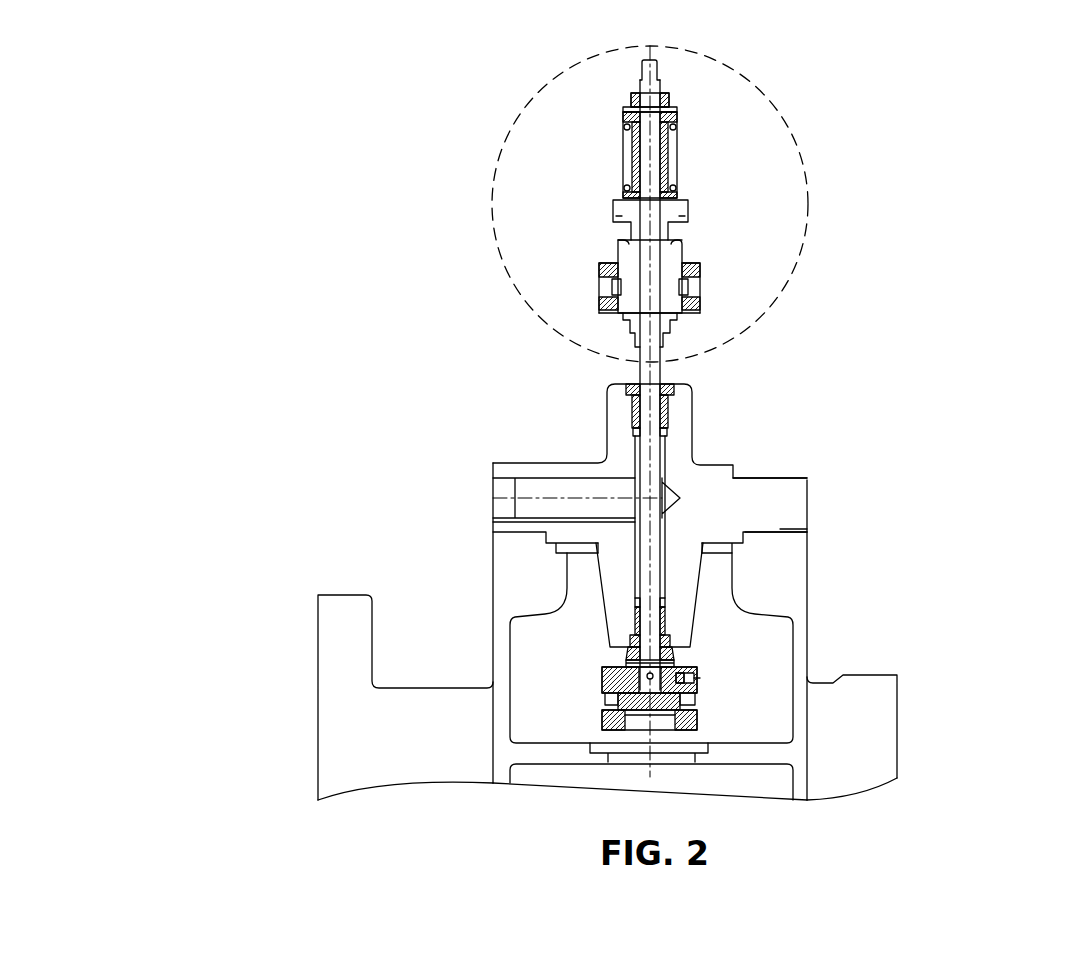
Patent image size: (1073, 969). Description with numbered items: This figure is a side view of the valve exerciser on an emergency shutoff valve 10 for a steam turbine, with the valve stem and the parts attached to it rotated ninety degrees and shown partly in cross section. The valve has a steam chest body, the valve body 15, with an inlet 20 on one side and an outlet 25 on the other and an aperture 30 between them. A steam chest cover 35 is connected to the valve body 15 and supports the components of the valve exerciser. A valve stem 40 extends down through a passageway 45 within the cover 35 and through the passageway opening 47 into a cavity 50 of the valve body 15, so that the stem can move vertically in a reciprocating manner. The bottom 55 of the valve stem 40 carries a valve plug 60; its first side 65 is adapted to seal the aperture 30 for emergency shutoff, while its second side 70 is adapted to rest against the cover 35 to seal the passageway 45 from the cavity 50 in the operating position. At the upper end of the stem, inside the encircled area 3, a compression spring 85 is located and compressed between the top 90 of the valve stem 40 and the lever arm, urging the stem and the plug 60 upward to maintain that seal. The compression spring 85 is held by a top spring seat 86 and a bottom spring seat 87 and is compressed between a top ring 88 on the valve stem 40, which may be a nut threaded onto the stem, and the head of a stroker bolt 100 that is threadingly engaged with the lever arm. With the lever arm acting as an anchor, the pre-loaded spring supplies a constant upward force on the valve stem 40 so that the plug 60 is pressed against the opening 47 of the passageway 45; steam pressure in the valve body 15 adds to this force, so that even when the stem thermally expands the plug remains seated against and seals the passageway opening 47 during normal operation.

The encircled area 3 is at (805, 202).
The emergency shutoff valve 10 is at (311, 372).
The valve body 15 is at (808, 617).
The inlet 20 is at (875, 743).
The outlet 25 is at (342, 723).
The aperture 30 is at (682, 760).
The steam chest cover 35 is at (795, 510).
The valve stem 40 is at (655, 452).
The passageway 45 is at (663, 472).
The passageway opening 47 is at (640, 650).
The cavity 50 is at (745, 600).
The bottom of the valve stem 55 is at (647, 640).
The valve plug 60 is at (600, 698).
The first side 65 is at (601, 727).
The second side 70 is at (672, 656).
The compression spring 85 is at (673, 167).
The top spring seat 86 is at (675, 118).
The bottom spring seat 87 is at (625, 197).
The top ring 88 is at (667, 100).
The top of the valve stem 90 is at (647, 73).
The stroker bolt 100 is at (672, 210).